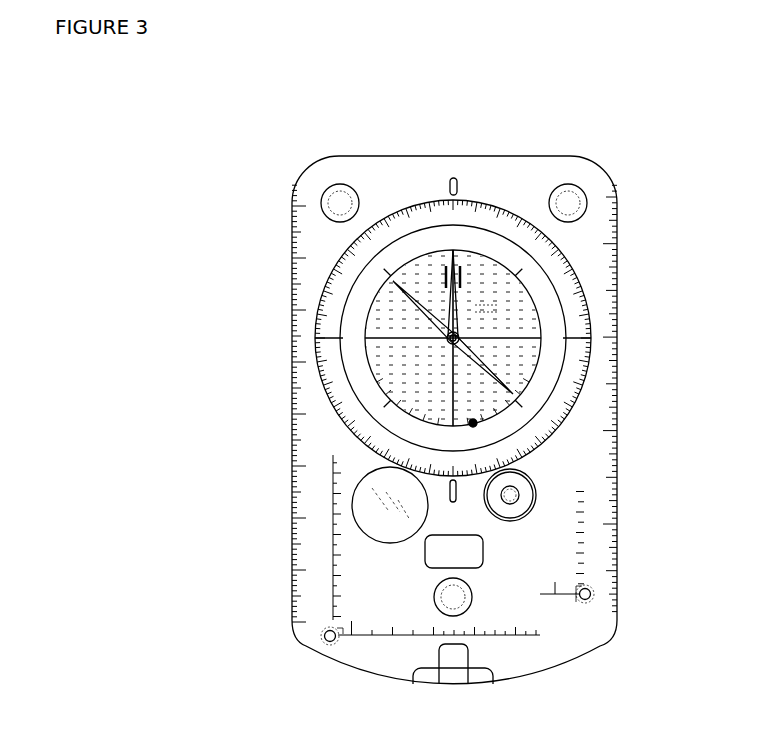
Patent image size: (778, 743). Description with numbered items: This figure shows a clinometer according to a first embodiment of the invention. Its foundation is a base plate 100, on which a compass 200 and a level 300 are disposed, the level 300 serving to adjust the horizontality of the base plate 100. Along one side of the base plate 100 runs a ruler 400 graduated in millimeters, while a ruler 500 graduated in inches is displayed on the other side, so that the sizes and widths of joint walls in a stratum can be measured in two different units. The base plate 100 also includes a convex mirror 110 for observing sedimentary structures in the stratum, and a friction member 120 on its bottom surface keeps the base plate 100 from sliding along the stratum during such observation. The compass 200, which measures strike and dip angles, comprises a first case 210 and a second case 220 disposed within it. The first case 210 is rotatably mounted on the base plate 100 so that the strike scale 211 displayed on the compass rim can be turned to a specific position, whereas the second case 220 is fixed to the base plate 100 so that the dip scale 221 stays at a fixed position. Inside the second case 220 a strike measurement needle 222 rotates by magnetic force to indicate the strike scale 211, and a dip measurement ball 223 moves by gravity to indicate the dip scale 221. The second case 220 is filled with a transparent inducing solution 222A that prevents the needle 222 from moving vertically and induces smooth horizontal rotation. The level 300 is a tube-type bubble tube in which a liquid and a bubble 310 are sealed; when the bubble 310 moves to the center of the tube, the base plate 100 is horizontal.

The base plate 100 is at (454, 420).
The convex mirror 110 is at (355, 500).
The friction member 120 is at (333, 188).
The compass 200 is at (402, 274).
The first case 210 is at (387, 338).
The strike scale 211 is at (323, 326).
The second case 220 is at (372, 382).
The dip scale 221 is at (430, 400).
The strike measurement needle 222 is at (500, 375).
The transparent inducing solution 222A is at (517, 315).
The dip measurement ball 223 is at (462, 435).
The level 300 is at (589, 473).
The bubble 310 is at (518, 494).
The ruler 400 is at (310, 578).
The ruler 500 is at (596, 590).